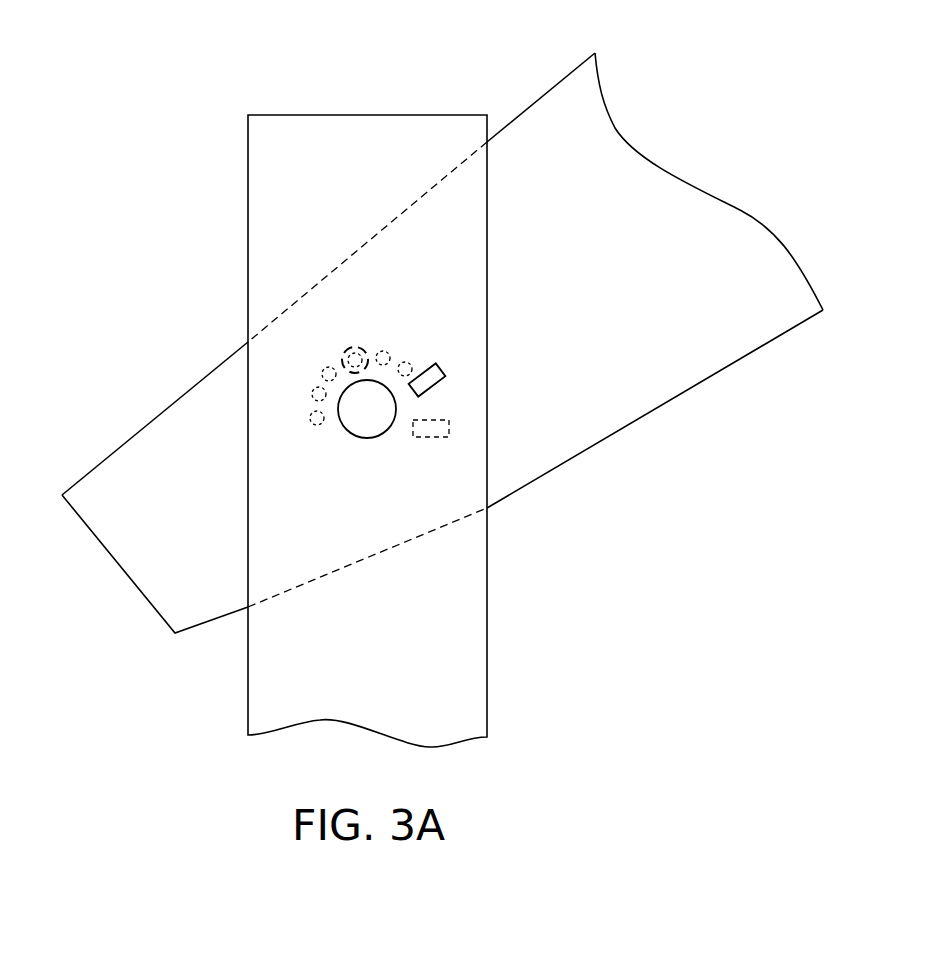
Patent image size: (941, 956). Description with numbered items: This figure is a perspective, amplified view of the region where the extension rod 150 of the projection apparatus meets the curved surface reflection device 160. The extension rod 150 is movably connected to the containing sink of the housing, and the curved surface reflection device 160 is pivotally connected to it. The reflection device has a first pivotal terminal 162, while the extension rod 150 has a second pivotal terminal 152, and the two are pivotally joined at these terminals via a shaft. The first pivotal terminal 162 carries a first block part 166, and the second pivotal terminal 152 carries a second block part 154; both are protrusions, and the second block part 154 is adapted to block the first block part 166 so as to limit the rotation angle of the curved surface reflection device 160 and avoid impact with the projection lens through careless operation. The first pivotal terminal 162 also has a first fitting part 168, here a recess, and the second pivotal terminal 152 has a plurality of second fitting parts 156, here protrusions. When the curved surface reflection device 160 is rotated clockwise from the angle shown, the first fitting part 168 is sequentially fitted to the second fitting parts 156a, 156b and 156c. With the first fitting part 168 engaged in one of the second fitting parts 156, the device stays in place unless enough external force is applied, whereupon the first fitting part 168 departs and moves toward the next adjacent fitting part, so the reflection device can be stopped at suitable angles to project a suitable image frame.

The extension rod 150 is at (472, 655).
The second pivotal terminal 152 is at (367, 228).
The second block part 154 is at (450, 432).
The second fitting parts 156 is at (311, 391).
The second fitting part 156a is at (344, 348).
The second fitting part 156b is at (390, 352).
The second fitting part 156c is at (412, 363).
The curved surface reflection device 160 is at (773, 272).
The first pivotal terminal 162 is at (233, 383).
The first block part 166 is at (448, 380).
The first fitting part 168 is at (352, 347).